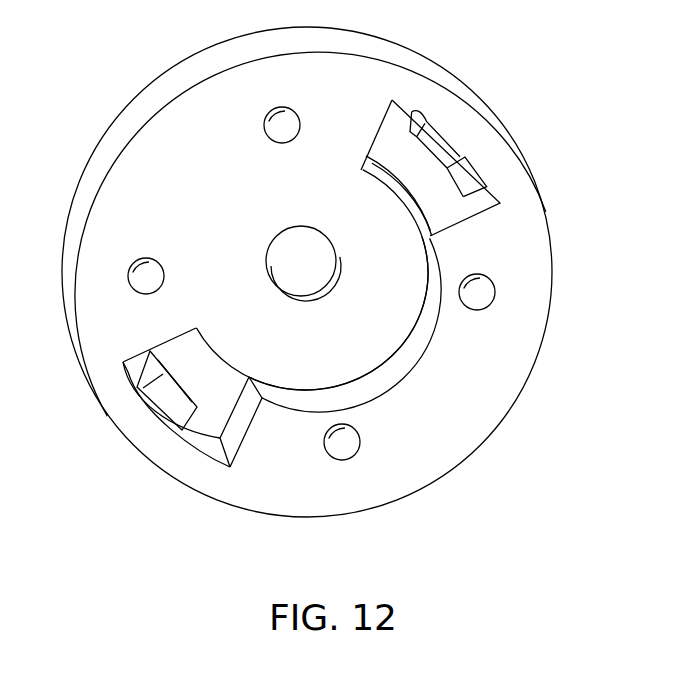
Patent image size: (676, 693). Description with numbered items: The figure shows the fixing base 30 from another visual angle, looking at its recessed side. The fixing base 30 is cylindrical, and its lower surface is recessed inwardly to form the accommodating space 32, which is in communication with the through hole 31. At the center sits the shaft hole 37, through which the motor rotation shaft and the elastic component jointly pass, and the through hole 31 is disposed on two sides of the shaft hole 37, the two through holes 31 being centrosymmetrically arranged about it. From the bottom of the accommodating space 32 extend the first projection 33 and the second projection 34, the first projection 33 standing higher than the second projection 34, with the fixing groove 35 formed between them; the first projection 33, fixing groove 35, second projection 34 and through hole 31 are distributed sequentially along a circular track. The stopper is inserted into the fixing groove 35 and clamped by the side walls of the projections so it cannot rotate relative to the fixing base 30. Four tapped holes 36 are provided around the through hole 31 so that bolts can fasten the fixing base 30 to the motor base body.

The fixing base 30 is at (323, 559).
The through hole 31 is at (482, 140).
The accommodating space 32 is at (373, 307).
The first projection 33 is at (470, 242).
The second projection 34 is at (443, 145).
The fixing groove 35 is at (465, 180).
The tapped hole 36 is at (143, 270).
The shaft hole 37 is at (298, 268).